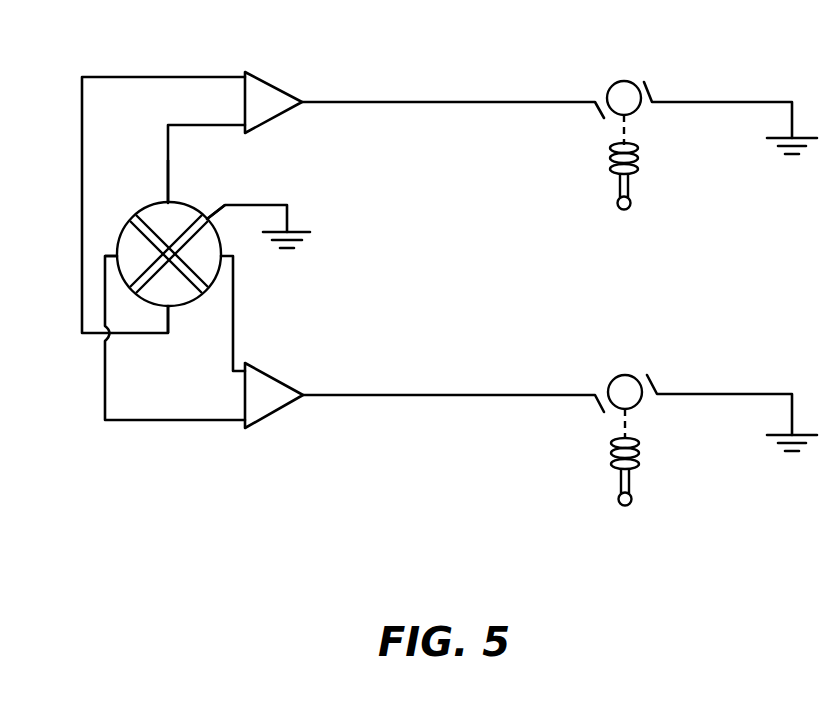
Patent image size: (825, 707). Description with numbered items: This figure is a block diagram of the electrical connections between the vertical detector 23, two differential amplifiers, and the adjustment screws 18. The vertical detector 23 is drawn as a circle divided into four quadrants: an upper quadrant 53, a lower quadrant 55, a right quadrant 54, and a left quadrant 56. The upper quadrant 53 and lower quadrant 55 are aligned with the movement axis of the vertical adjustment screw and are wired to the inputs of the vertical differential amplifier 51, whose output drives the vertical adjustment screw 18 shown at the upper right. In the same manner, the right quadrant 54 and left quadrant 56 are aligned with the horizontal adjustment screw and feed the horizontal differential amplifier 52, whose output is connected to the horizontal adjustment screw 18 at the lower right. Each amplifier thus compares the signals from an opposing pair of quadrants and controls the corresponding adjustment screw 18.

The adjustment screw 18 is at (630, 83).
The vertical detector 23 is at (183, 206).
The vertical differential amplifier 51 is at (270, 82).
The horizontal differential amplifier 52 is at (272, 414).
The upper quadrant 53 is at (152, 216).
The right quadrant 54 is at (205, 247).
The lower quadrant 55 is at (172, 292).
The left quadrant 56 is at (134, 250).